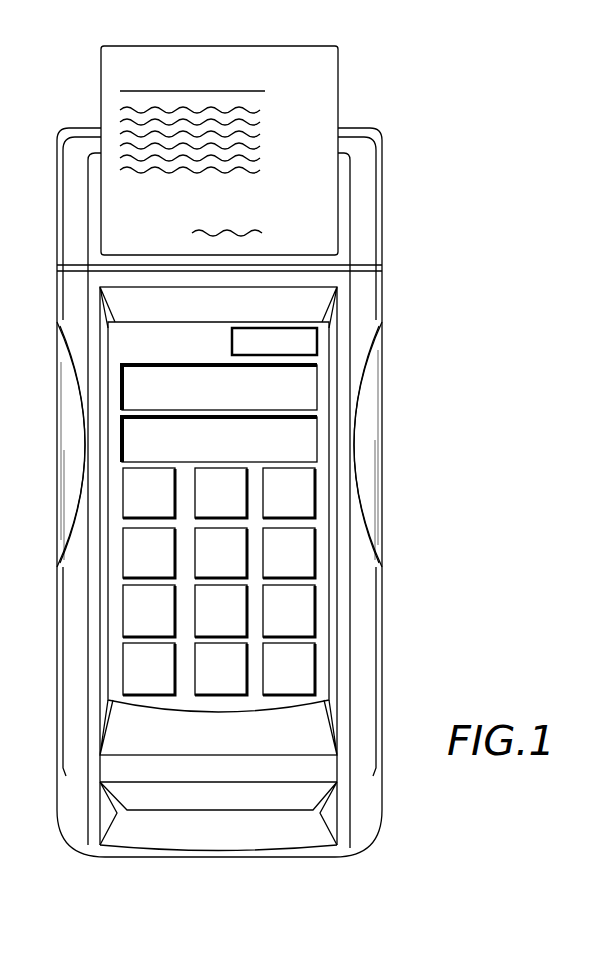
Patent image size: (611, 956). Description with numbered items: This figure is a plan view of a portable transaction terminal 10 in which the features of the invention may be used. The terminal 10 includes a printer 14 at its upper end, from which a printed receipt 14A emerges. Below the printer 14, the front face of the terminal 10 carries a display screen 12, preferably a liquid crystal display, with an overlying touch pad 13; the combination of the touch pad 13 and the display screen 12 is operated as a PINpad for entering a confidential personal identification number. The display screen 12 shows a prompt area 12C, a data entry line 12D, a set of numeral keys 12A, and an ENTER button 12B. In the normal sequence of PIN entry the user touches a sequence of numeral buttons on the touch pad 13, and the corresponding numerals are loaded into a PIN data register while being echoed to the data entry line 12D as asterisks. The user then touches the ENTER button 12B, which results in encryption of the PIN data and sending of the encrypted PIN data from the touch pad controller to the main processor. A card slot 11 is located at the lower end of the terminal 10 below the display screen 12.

The payment terminal 10 is at (380, 634).
The card slot 11 is at (308, 828).
The display screen 12 is at (352, 521).
The touch pad 13 is at (326, 557).
The numeric keypad keys 12A is at (243, 470).
The ENTER button 12B is at (305, 650).
The prompt message area 12C is at (310, 388).
The data entry line 12D is at (313, 441).
The printer 14 is at (357, 187).
The printed receipt 14A is at (322, 87).